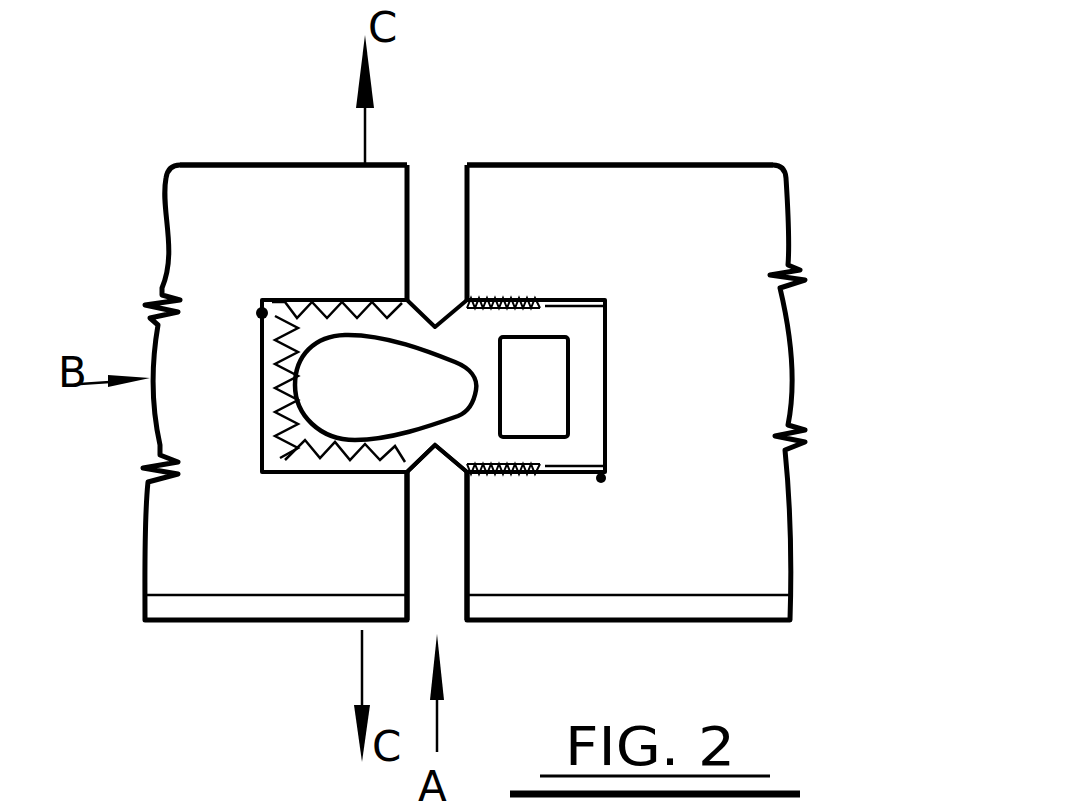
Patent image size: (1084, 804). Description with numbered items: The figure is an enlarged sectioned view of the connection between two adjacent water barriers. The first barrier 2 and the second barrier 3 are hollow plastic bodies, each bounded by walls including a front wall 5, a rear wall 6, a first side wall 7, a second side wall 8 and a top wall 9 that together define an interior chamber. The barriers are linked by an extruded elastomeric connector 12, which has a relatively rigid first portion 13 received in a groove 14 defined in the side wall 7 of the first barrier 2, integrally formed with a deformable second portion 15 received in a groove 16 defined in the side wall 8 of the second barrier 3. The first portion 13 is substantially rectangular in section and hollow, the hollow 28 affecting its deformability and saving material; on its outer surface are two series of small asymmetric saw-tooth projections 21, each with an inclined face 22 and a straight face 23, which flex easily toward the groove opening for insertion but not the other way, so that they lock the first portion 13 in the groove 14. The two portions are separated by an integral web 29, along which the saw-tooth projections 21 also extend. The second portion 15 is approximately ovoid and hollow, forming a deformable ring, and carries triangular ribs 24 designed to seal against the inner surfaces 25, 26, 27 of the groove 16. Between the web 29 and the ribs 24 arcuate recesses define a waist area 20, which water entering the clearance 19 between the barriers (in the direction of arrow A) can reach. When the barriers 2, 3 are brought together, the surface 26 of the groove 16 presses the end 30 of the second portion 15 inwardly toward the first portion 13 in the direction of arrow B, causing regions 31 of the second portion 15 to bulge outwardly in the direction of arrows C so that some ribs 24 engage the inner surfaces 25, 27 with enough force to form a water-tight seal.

The first barrier 2 is at (850, 238).
The second barrier 3 is at (150, 225).
The front wall 5 is at (180, 607).
The rear wall 6 is at (206, 164).
The first side wall 7 is at (470, 223).
The second side wall 8 is at (407, 246).
The top wall 9 is at (755, 491).
The elastomeric connector 12 is at (435, 225).
The first portion 13 is at (605, 403).
The groove 14 is at (604, 480).
The second portion 15 is at (272, 363).
The groove 16 is at (256, 314).
The clearance 19 is at (442, 615).
The waist area 20 is at (430, 452).
The saw-tooth projections 21 is at (553, 276).
The inclined face 22 is at (508, 477).
The straight face 23 is at (490, 477).
The ribs 24 is at (287, 416).
The inner surface 25 is at (352, 298).
The inner surface 26 is at (262, 414).
The inner surface 27 is at (355, 456).
The hollow 28 is at (552, 358).
The integral web 29 is at (330, 404).
The end 30 is at (264, 386).
The regions 31 is at (340, 332).